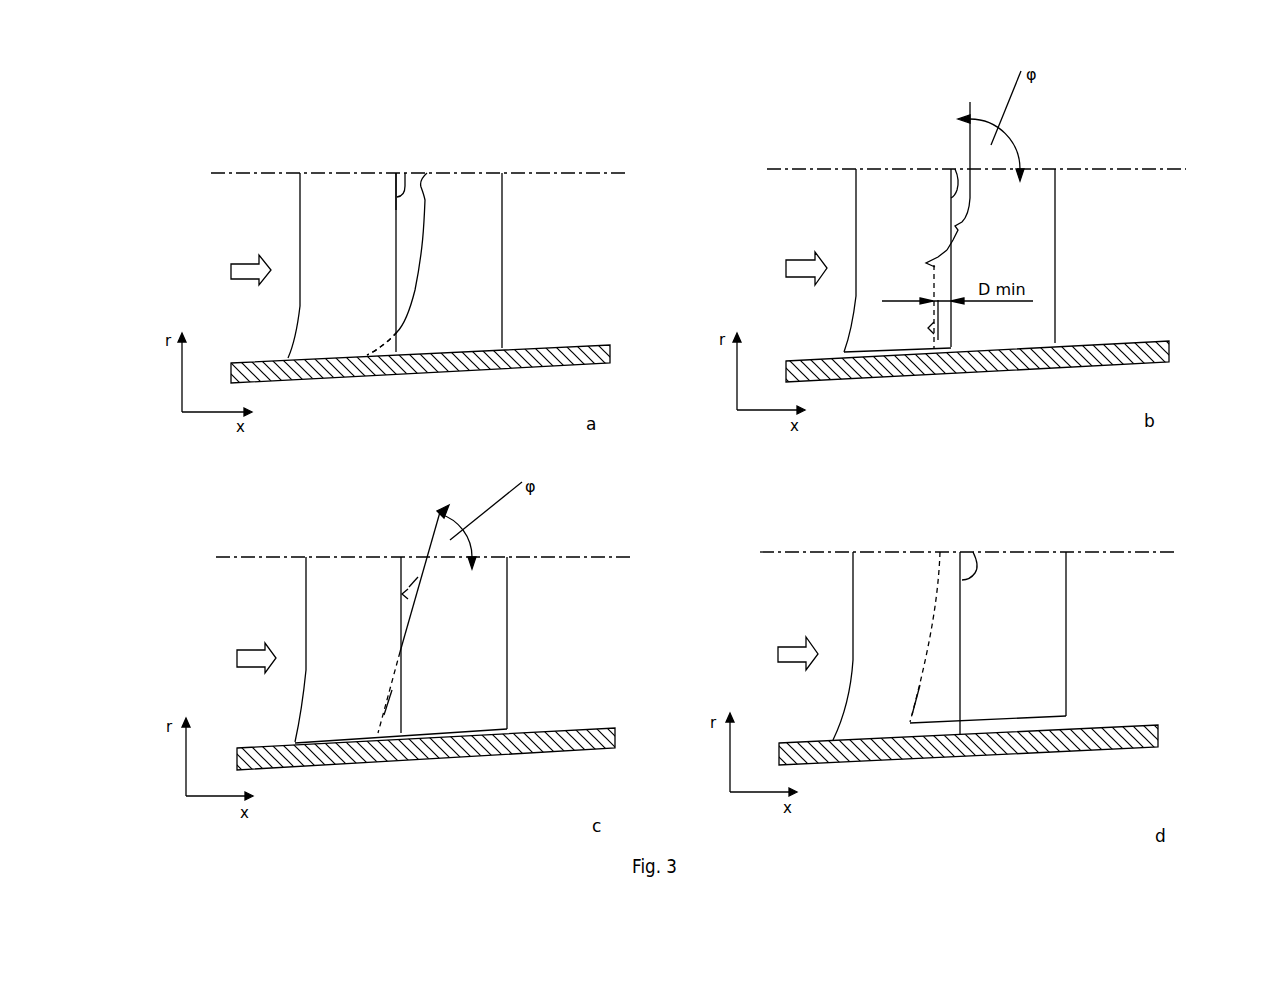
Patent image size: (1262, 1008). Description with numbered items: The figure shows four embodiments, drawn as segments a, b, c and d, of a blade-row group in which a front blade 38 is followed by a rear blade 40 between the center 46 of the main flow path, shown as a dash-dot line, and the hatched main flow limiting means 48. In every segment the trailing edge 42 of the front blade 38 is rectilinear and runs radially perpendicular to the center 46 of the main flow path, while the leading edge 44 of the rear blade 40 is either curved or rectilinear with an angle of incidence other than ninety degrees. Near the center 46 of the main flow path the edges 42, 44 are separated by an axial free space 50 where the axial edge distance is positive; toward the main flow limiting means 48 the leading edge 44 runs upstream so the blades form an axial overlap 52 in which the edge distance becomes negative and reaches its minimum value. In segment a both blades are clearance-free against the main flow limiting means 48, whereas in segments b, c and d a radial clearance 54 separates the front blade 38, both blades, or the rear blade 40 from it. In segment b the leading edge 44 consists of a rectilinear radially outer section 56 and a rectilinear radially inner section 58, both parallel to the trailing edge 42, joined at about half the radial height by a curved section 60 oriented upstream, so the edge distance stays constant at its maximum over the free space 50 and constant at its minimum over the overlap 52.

The front blade 38 is at (333, 188).
The rear blade 40 is at (477, 180).
The trailing edge 42 is at (399, 183).
The leading edge 44 is at (424, 178).
The center of the main flow path 46 is at (576, 173).
The main flow limiting means 48 is at (594, 353).
The axial free space 50 is at (405, 190).
The axial overlap 52 is at (390, 347).
The radial clearance 54 is at (881, 350).
The rectilinear radially outer section 56 is at (960, 224).
The rectilinear radially inner section 58 is at (928, 328).
The curved section 60 is at (930, 264).